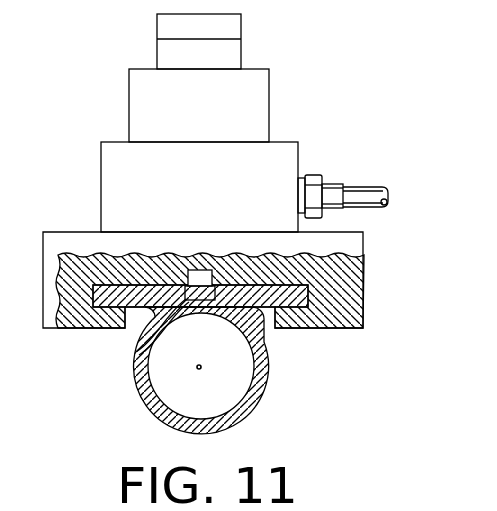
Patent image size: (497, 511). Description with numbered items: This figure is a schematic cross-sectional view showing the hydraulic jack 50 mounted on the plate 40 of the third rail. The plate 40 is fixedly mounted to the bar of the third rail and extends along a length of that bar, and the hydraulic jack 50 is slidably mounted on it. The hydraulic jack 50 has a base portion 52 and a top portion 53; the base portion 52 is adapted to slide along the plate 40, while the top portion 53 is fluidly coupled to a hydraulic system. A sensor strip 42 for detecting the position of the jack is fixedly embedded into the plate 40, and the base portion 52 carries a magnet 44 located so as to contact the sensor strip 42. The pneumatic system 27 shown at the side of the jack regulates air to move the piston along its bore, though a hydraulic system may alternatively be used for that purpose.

The hydraulic jack 50 is at (129, 113).
The top portion 53 is at (258, 163).
The pneumatic system 27 is at (362, 197).
The base portion 52 is at (345, 290).
The plate 40 is at (275, 298).
The magnet 44 is at (196, 293).
The sensor strip 42 is at (143, 340).